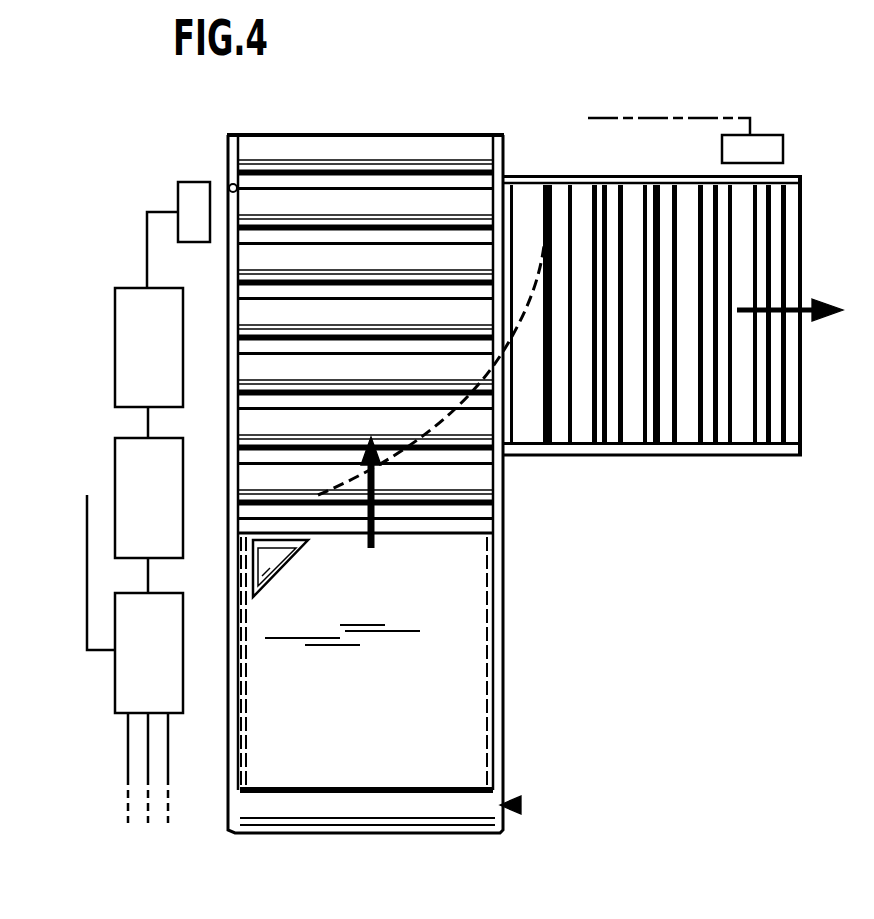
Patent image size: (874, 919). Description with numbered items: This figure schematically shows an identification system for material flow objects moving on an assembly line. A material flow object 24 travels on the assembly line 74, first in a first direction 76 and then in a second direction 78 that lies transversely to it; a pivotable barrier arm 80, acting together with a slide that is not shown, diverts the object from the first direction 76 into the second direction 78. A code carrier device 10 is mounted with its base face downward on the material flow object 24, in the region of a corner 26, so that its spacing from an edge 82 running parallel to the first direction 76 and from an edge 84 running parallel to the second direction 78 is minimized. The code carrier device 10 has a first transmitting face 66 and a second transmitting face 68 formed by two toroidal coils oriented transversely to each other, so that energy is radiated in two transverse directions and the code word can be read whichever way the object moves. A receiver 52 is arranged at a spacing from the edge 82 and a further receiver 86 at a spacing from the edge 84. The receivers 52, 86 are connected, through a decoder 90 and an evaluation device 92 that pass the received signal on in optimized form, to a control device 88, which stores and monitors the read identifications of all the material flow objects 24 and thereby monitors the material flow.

The code carrier device 10 is at (270, 568).
The material flow object 24 is at (490, 637).
The corner 26 is at (237, 523).
The receiver 52 is at (193, 192).
The first transmitting face 66 is at (263, 583).
The second transmitting face 68 is at (297, 553).
The assembly line 74 is at (522, 804).
The first direction 76 is at (376, 510).
The second direction 78 is at (790, 307).
The pivotable barrier arm 80 is at (240, 342).
The edge 82 is at (227, 808).
The edge 84 is at (570, 175).
The receiver 86 is at (768, 150).
The control device 88 is at (120, 687).
The decoder 90 is at (122, 300).
The evaluation device 92 is at (122, 457).